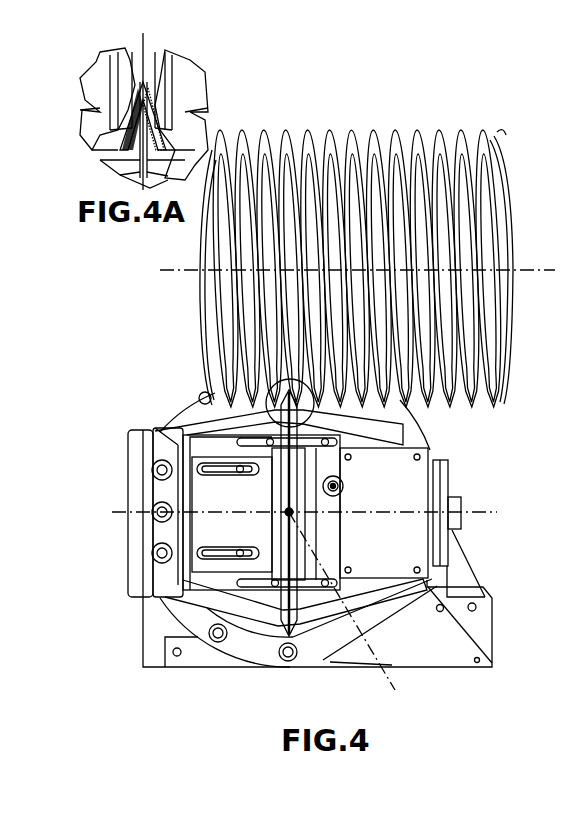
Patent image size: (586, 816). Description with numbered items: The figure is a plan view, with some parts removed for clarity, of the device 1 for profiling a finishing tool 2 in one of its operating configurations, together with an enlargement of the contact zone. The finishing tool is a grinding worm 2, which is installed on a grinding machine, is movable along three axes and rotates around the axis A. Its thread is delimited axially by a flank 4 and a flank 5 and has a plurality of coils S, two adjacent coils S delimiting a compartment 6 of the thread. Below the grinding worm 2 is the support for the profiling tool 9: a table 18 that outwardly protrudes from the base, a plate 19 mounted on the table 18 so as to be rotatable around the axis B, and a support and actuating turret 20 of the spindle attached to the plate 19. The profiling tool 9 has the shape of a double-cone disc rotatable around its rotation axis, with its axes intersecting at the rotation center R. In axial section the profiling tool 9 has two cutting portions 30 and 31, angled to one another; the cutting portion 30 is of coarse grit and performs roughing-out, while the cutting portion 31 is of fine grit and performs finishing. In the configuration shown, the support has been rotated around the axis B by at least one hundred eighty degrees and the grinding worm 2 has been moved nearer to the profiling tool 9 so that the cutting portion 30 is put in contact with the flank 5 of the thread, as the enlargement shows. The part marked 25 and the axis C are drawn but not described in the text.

In FIG. 4, the device for profiling a finishing tool 1 is at (508, 490).
In FIG. 4, the grinding worm 2 is at (508, 130).
In FIG. 4A, the flank 4 is at (125, 72).
In FIG. 4A, the flank 5 is at (158, 80).
In FIG. 4, the compartment 6 is at (478, 138).
In FIG. 4A, the profiling tool 9 is at (165, 148).
In FIG. 4, the profiling tool 9 is at (298, 610).
In FIG. 4, the table 18 is at (178, 445).
In FIG. 4, the plate 19 is at (200, 500).
In FIG. 4, the support and actuating turret 20 is at (405, 482).
In FIG. 4, the flange 25 is at (446, 482).
In FIG. 4A, the cutting portion 30 is at (160, 108).
In FIG. 4A, the cutting portion 31 is at (130, 122).
In FIG. 4, the axis A is at (532, 268).
In FIG. 4, the axis B is at (350, 610).
In FIG. 4, the blade axis C,L C is at (477, 516).
In FIG. 4, the rotation center R is at (286, 510).
In FIG. 4, the coils S is at (315, 130).